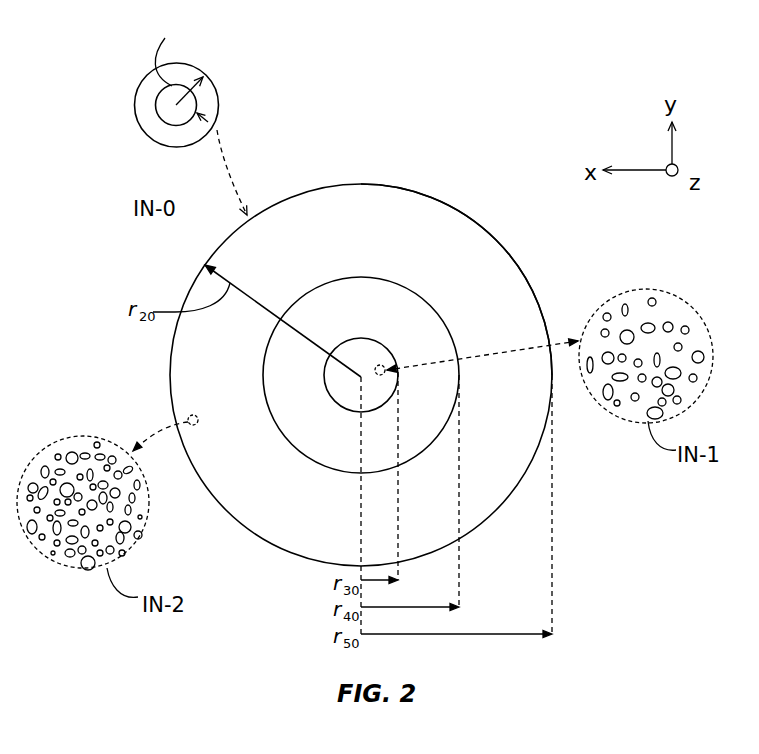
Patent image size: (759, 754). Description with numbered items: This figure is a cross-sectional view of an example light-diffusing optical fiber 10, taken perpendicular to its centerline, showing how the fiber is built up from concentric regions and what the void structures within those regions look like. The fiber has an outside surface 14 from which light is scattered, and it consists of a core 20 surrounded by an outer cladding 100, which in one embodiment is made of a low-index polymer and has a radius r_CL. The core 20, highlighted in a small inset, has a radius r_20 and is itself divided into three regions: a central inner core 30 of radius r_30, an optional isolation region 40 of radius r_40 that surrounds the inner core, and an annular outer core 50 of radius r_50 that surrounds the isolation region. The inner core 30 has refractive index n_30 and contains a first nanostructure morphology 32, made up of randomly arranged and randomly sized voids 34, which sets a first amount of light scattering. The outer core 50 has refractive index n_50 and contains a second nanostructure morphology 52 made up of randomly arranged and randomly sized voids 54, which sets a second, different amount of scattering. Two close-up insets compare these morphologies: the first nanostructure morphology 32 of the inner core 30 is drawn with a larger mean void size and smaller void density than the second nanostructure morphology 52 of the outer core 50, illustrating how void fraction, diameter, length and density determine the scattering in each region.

The light-diffusing optical fiber 10 is at (172, 82).
The outside surface 14 is at (188, 63).
The outer cladding 100 is at (207, 93).
The core 20 is at (311, 326).
The inner core 30 is at (362, 338).
The isolation region 40 is at (417, 288).
The outer core 50 is at (532, 282).
The first nanostructure morphology 32 is at (652, 331).
The voids 34 is at (657, 353).
The second nanostructure morphology 52 is at (83, 468).
The voids 54 is at (85, 452).